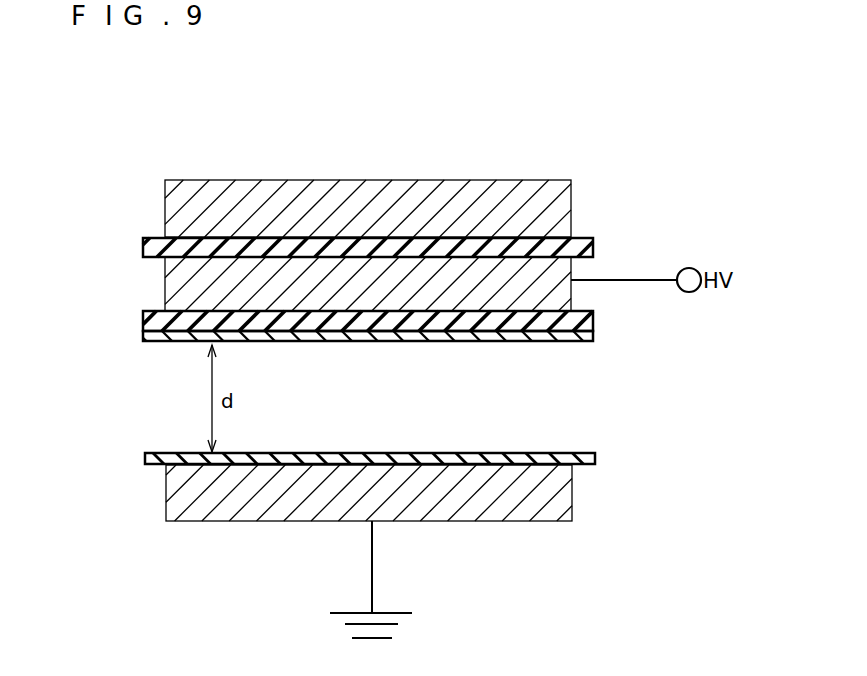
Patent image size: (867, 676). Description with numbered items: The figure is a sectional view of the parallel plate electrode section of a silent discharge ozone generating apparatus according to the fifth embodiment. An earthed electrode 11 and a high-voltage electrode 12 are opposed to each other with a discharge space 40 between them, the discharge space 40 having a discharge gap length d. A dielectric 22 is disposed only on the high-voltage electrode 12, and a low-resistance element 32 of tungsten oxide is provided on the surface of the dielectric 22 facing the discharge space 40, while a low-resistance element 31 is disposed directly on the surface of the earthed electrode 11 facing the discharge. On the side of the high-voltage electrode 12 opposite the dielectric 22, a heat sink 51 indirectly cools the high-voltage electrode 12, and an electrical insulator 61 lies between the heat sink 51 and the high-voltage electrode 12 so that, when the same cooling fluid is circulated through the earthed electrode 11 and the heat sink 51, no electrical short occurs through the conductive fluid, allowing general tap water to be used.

The heat sink 51 is at (246, 180).
The electrical insulator 61 is at (594, 243).
The high-voltage electrode 12 is at (166, 283).
The dielectric 22 is at (594, 315).
The low-resistance element 32 is at (145, 336).
The discharge space 40 is at (567, 384).
The low-resistance element 31 is at (146, 458).
The earthed electrode 11 is at (248, 521).